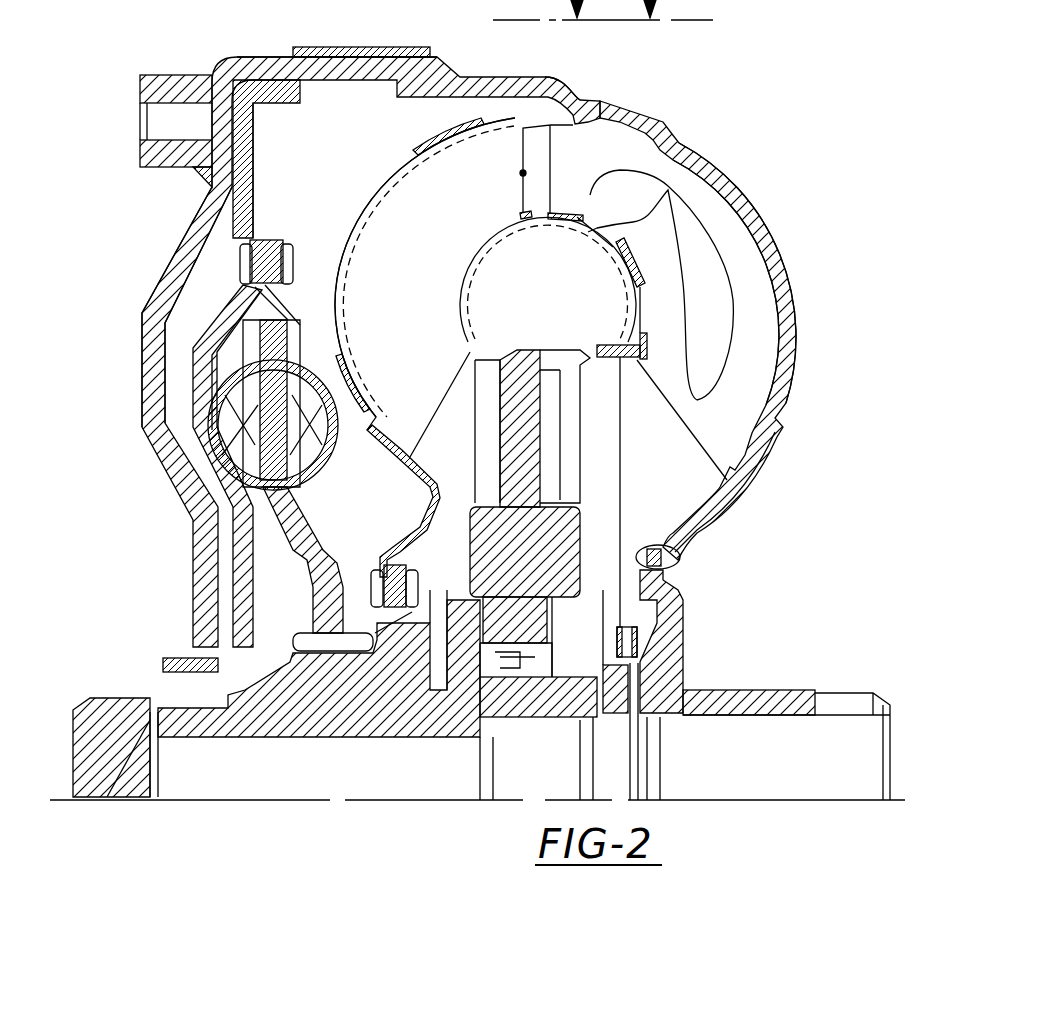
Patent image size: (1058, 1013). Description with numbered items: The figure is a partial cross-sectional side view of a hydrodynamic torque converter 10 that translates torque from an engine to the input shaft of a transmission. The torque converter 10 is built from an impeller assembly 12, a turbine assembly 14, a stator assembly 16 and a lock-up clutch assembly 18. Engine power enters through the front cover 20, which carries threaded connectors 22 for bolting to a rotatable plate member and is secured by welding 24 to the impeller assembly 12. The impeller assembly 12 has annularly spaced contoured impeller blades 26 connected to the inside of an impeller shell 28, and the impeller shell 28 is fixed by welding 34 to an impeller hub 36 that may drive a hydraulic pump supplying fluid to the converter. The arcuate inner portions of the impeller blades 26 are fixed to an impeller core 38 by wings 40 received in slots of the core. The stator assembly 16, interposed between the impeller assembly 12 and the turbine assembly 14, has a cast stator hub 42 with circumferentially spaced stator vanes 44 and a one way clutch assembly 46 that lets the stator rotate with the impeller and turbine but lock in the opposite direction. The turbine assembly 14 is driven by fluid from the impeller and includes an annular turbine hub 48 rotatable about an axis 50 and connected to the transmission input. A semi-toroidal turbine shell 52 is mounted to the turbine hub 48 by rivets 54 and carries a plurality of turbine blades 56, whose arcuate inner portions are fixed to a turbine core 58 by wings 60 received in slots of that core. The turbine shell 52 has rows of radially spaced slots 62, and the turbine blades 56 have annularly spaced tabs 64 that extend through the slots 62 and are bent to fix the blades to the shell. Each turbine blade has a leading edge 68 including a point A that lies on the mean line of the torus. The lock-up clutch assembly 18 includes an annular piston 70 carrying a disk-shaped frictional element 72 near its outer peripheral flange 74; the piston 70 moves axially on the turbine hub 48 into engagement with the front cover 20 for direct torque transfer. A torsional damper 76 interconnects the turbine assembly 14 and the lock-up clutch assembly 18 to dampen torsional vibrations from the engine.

The hydrodynamic torque converter 10 is at (755, 178).
The impeller assembly 12 is at (800, 290).
The turbine assembly 14 is at (417, 143).
The stator assembly 16 is at (680, 558).
The lock-up clutch assembly 18 is at (258, 207).
The front cover 20 is at (185, 240).
The threaded connectors 22 is at (165, 73).
The welding 24 is at (457, 58).
The impeller blades 26 is at (670, 170).
The impeller shell 28 is at (758, 232).
The welding 34 is at (680, 584).
The impeller hub 36 is at (768, 692).
The impeller core 38 is at (628, 265).
The wings 40 is at (597, 228).
The stator hub 42 is at (582, 507).
The stator vanes 44 is at (565, 447).
The one way clutch assembly 46 is at (533, 663).
The turbine hub 48 is at (412, 735).
The axis 50 is at (903, 797).
The turbine shell 52 is at (373, 245).
The rivets 54 is at (415, 565).
The turbine blades 56 is at (525, 215).
The turbine core 58 is at (474, 272).
The wings 60 is at (469, 318).
The slots 62 is at (358, 302).
The tabs 64 is at (405, 183).
The leading edge 68 is at (553, 90).
The annular piston 70 is at (255, 158).
The frictional element 72 is at (210, 152).
The outer peripheral flange 74 is at (270, 88).
The torsional damper 76 is at (296, 301).